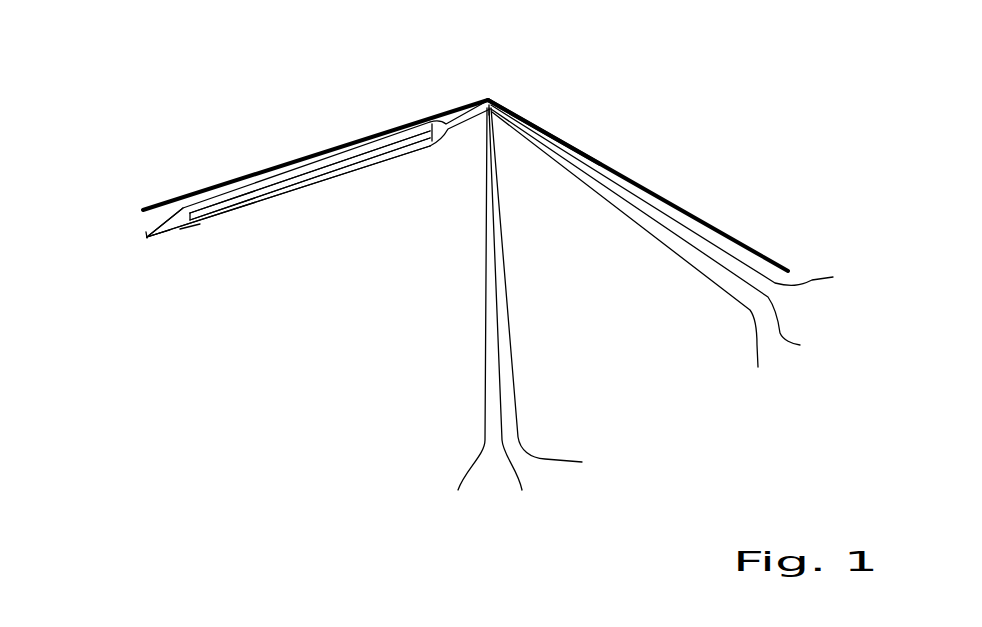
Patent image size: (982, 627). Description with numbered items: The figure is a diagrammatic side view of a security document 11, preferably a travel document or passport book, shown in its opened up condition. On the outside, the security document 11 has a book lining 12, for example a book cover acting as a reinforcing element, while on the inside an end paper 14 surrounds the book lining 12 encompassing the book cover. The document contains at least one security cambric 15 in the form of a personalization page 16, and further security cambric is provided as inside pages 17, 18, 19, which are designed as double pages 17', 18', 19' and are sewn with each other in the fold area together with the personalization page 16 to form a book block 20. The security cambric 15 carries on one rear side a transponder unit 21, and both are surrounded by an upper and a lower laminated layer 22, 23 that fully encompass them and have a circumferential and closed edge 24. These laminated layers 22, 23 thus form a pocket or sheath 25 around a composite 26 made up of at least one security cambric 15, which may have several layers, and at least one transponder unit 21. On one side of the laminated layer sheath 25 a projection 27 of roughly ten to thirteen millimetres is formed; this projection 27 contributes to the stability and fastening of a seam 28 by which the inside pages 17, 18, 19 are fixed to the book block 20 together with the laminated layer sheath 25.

The security document 11 is at (678, 148).
The book lining 12 is at (158, 209).
The end paper 14 is at (147, 235).
The security cambric 15 is at (262, 203).
The personalization page 16 is at (294, 191).
The inside page 17 is at (464, 316).
The inside page 18 is at (516, 316).
The inside page 19 is at (554, 295).
The double page 17' is at (637, 257).
The double page 18' is at (667, 236).
The double page 19' is at (683, 199).
The book block 20 is at (558, 296).
The transponder unit 21 is at (310, 157).
The upper laminated layer 22 is at (229, 213).
The lower laminated layer 23 is at (217, 200).
The circumferential and closed edge 24 is at (150, 239).
The sheath 25 is at (163, 243).
The composite 26 is at (187, 230).
The projection 27 is at (547, 126).
The seam 28 is at (488, 97).